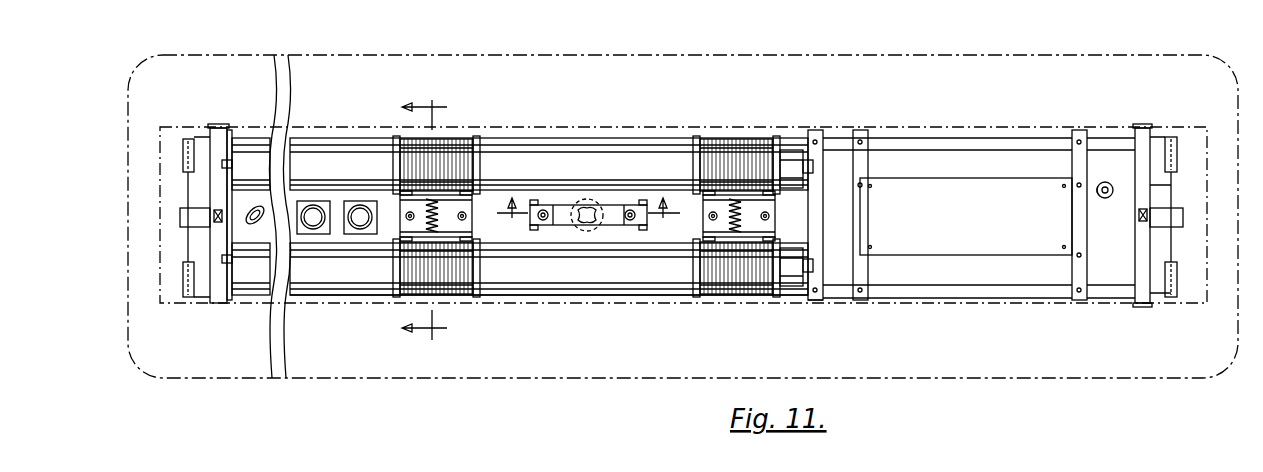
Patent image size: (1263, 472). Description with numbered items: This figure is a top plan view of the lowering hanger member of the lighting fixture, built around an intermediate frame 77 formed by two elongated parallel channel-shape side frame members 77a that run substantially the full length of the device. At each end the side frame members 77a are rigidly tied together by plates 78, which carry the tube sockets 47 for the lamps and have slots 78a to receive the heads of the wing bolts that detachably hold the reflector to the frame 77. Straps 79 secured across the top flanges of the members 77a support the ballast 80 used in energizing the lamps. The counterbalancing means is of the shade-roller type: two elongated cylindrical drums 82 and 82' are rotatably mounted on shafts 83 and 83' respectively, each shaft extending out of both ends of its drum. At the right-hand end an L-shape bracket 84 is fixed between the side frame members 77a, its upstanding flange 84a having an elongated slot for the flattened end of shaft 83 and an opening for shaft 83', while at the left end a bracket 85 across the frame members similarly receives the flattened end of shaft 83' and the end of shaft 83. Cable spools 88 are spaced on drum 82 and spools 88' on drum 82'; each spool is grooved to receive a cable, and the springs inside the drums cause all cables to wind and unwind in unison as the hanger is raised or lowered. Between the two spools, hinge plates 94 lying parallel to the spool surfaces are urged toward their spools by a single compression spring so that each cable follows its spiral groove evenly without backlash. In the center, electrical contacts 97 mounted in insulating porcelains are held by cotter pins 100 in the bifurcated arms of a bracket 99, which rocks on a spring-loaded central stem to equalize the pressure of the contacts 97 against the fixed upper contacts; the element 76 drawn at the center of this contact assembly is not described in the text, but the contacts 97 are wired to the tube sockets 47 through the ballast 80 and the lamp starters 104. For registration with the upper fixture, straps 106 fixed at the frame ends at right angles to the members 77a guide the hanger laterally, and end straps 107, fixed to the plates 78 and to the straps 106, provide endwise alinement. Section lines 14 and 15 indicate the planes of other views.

The section line 14 is at (588, 222).
The section line 15 is at (437, 218).
The tube sockets 47 is at (183, 155).
The coupling ring 76 is at (603, 209).
The intermediate frame 77 is at (585, 300).
The side frame members 77a is at (236, 140).
The plates 78 is at (663, 218).
The slots 78a is at (1106, 184).
The straps 79 is at (868, 272).
The ballast 80 is at (966, 216).
The drum 82 is at (520, 287).
The drum 82' is at (520, 146).
The shaft 83 is at (825, 265).
The shaft 83' is at (826, 176).
The L-shape bracket 84 is at (823, 173).
The upstanding flange 84a is at (812, 280).
The bracket 85 is at (229, 137).
The cable spools 88 is at (598, 284).
The spools 88' is at (598, 143).
The hinge plates 94 is at (462, 232).
The electrical contacts 97 is at (545, 220).
The bracket 99 is at (562, 207).
The cotter pins 100 is at (534, 203).
The lamp starters 104 is at (352, 228).
The straps 106 is at (210, 188).
The straps 107 is at (180, 220).